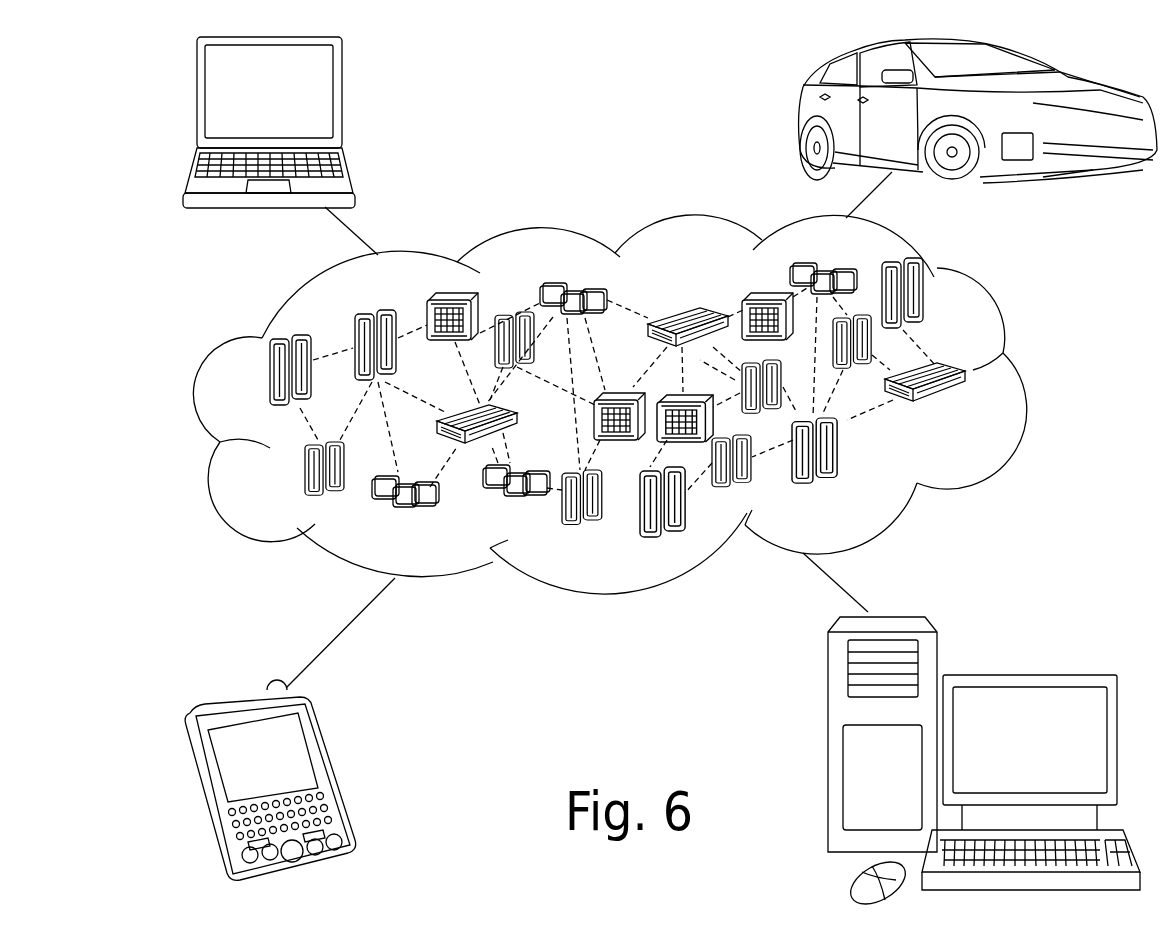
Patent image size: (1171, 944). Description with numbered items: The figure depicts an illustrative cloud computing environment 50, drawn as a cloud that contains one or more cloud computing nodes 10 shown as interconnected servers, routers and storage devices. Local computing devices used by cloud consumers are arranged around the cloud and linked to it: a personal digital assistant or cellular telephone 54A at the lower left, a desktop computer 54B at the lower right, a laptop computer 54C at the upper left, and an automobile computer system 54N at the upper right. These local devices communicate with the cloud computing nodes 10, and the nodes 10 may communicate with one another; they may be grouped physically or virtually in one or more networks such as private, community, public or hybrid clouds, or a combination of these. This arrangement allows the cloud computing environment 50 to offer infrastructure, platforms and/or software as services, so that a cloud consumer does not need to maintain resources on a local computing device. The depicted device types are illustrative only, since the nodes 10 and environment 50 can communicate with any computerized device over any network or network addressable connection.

The cloud computing nodes 10 is at (966, 411).
The cloud computing environment 50 is at (1024, 372).
The personal digital assistant (PDA) or cellular telephone 54A is at (330, 770).
The desktop computer 54B is at (1025, 674).
The laptop computer 54C is at (343, 100).
The automobile computer system 54N is at (800, 120).